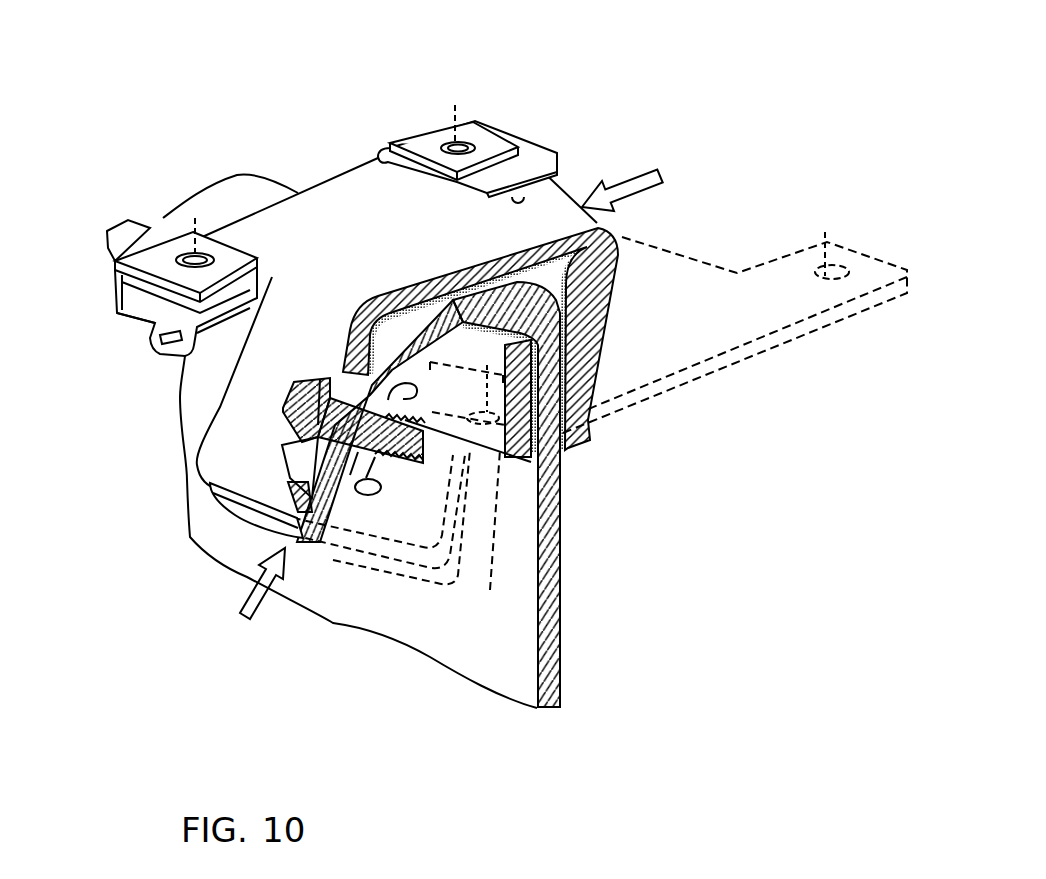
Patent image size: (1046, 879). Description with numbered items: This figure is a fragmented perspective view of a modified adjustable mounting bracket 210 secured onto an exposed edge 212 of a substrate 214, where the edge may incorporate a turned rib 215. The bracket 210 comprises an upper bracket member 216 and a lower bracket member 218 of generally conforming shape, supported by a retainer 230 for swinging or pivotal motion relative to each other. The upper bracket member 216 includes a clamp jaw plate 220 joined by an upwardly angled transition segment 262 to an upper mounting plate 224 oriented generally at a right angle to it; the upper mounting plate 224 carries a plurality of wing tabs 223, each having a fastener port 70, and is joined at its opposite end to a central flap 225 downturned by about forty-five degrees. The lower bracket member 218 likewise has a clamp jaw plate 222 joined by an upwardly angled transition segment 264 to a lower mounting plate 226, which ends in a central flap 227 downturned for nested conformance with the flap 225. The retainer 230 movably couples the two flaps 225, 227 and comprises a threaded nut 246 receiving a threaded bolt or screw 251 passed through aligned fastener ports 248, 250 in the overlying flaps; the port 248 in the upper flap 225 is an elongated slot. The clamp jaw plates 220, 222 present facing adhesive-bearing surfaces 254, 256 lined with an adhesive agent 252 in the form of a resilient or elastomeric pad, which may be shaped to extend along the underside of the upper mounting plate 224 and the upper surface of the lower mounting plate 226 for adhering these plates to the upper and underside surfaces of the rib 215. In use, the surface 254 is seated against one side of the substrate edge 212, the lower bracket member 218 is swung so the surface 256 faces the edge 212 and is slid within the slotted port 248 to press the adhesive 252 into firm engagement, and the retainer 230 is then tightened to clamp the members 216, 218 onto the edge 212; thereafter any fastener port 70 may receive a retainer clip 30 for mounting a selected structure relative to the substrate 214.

The adjustable mounting bracket 210 is at (271, 86).
The retainer clip 30 is at (175, 250).
The fastener port 70 is at (832, 270).
The exposed edge 212 is at (557, 490).
The substrate 214 is at (490, 668).
The turned rib 215 is at (473, 272).
The upper bracket member 216 is at (381, 195).
The lower bracket member 218 is at (333, 512).
The clamp jaw plate 220 is at (580, 397).
The clamp jaw plate 222 is at (490, 443).
The wing tab 223 is at (157, 297).
The upper mounting plate 224 is at (518, 222).
The central flap 225 is at (237, 393).
The lower mounting plate 226 is at (432, 287).
The central flap 227 is at (250, 527).
The retainer 230 is at (251, 428).
The threaded nut 246 is at (395, 462).
The fastener port 248 is at (292, 472).
The fastener port 250 is at (348, 380).
The threaded bolt or screw 251 is at (302, 402).
The adhesive agent 252 is at (617, 237).
The adhesive-bearing surface 254 is at (587, 342).
The adhesive-bearing surface 256 is at (530, 463).
The transition segment 262 is at (603, 292).
The transition segment 264 is at (490, 343).